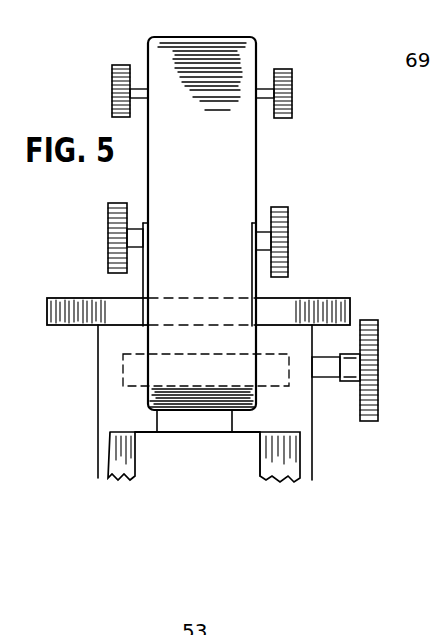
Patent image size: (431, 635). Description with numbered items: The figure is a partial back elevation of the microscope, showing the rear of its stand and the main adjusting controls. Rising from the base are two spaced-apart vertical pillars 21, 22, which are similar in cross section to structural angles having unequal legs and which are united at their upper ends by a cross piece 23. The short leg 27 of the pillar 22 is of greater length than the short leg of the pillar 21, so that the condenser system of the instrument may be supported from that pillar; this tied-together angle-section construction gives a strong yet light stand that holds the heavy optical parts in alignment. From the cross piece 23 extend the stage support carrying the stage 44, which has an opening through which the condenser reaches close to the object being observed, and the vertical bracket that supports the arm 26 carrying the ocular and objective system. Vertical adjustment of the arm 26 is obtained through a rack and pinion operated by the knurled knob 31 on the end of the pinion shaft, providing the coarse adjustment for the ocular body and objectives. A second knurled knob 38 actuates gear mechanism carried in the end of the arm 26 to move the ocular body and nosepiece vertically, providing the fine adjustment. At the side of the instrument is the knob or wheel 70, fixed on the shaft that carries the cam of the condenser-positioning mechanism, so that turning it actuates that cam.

The vertical pillar 21 is at (105, 452).
The vertical pillar 22 is at (312, 452).
The cross piece 23 is at (108, 395).
The arm 26 is at (256, 165).
The short leg 27 is at (267, 462).
The knurled knob 31 is at (288, 253).
The knurled knob 38 is at (292, 103).
The stage 44 is at (337, 315).
The knob or wheel 70 is at (380, 351).